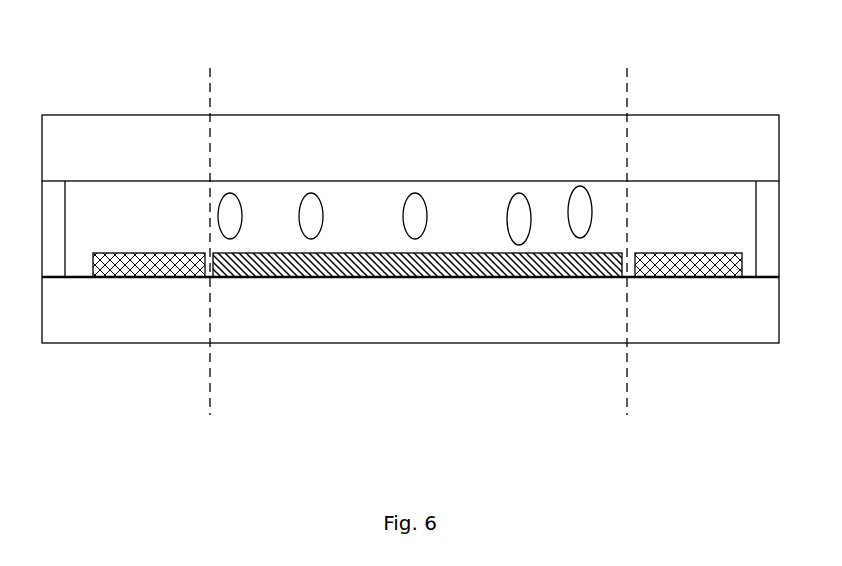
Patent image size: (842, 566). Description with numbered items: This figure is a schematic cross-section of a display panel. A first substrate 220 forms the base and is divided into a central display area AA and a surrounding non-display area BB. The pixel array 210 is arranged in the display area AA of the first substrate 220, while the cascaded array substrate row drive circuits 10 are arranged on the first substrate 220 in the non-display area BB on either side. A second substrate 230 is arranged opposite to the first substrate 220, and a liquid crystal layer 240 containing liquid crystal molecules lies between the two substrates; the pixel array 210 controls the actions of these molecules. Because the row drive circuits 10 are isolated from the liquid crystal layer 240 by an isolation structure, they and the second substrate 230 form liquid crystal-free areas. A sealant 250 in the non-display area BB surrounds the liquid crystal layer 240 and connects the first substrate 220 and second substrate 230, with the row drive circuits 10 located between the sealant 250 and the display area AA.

The array substrate row drive circuit 10 is at (155, 267).
The pixel array 210 is at (452, 267).
The first substrate 220 is at (347, 298).
The second substrate 230 is at (333, 163).
The liquid crystal layer 240 is at (520, 210).
The sealant 250 is at (767, 198).
The display area AA is at (416, 86).
The non-display area BB is at (156, 88).